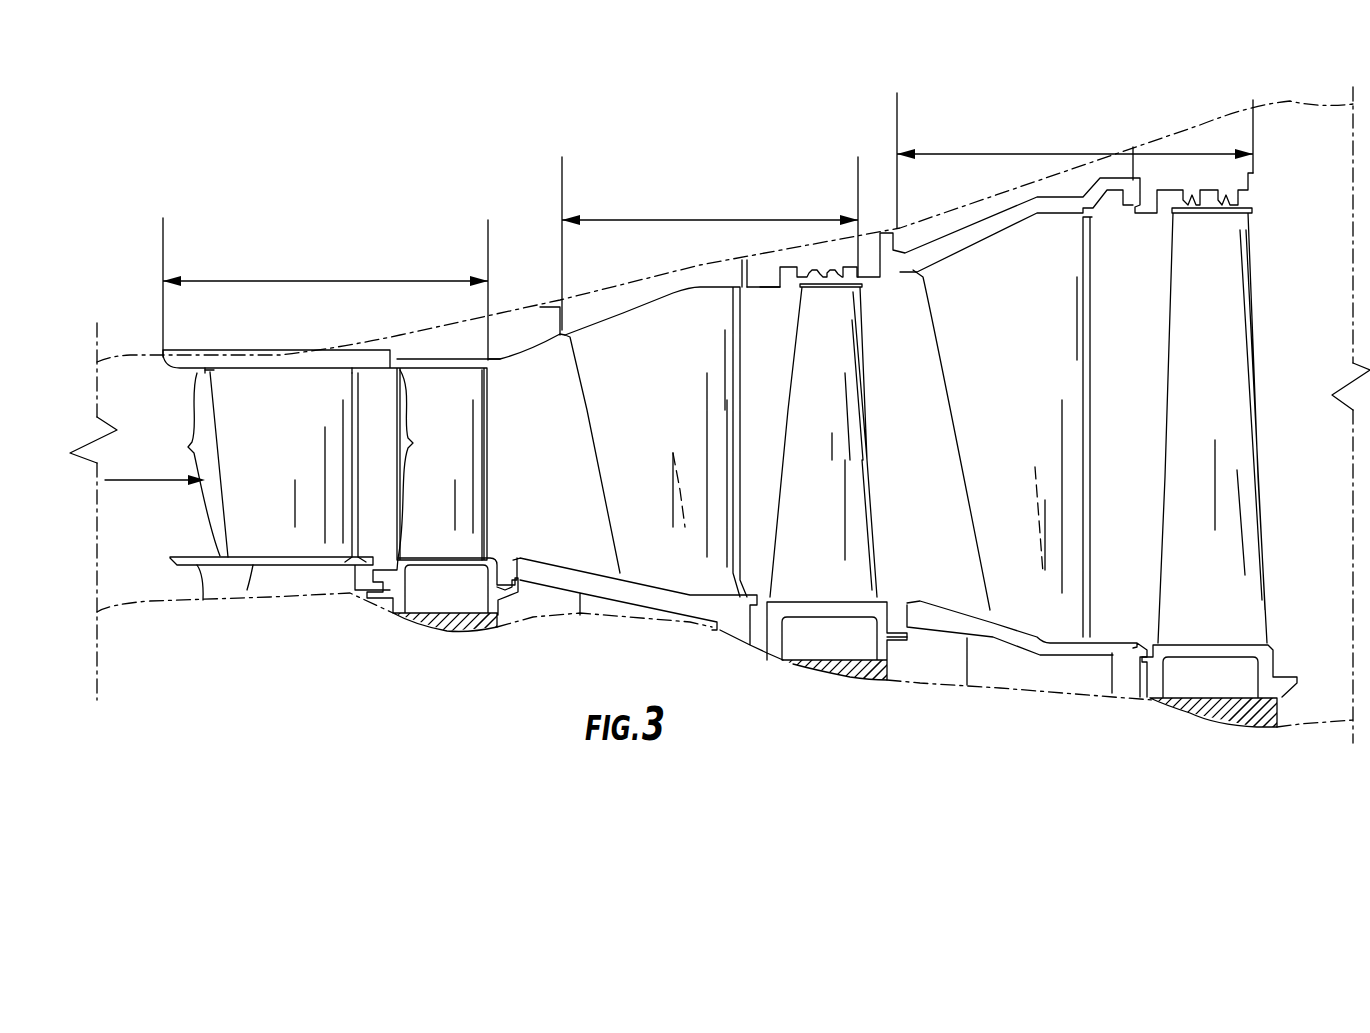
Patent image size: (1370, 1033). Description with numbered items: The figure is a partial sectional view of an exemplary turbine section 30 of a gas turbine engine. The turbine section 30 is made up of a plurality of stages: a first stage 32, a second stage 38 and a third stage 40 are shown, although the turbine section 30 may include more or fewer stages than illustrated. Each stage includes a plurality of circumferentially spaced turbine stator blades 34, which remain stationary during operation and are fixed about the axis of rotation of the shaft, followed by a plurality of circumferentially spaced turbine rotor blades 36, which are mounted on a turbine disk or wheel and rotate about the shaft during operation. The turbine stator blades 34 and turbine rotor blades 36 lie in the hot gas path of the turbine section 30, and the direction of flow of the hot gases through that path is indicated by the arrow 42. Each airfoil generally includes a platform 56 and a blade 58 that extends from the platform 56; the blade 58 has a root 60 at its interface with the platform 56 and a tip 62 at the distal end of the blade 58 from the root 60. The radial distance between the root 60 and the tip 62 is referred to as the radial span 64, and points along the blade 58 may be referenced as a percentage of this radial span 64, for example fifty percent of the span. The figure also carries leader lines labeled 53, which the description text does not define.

The turbine section 30 is at (448, 194).
The first stage 32 is at (325, 289).
The turbine stator blade 34 is at (244, 467).
The turbine rotor blade 36 is at (467, 517).
The second stage 38 is at (710, 243).
The third stage 40 is at (1075, 160).
The arrow 42 is at (165, 484).
The outer platform 53 is at (623, 333).
The platform 56 is at (255, 565).
The blade 58 is at (258, 388).
The root 60 is at (227, 557).
The tip 62 is at (205, 368).
The radial span 64 is at (301, 464).